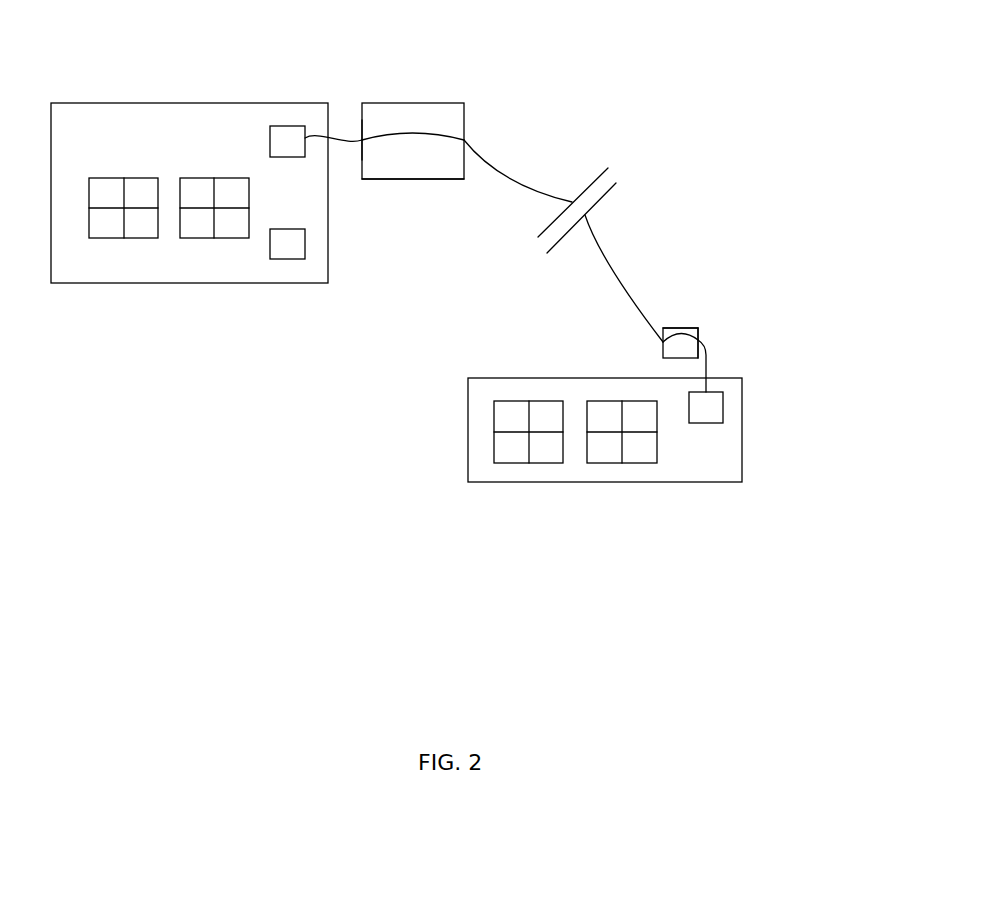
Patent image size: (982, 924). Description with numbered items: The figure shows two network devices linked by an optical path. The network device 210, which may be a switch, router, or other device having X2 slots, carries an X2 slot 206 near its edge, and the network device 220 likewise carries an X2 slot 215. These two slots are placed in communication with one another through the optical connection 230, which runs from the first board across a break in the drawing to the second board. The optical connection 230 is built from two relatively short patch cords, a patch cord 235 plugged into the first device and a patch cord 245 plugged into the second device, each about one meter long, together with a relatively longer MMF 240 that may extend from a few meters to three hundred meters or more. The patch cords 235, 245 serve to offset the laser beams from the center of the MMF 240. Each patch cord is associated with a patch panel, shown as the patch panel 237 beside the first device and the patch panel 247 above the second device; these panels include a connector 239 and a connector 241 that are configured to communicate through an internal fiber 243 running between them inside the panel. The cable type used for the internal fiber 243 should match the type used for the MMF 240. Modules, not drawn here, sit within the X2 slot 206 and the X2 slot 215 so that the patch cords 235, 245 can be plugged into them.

The network device 210 is at (63, 153).
The X2 slot of first line card 206 is at (337, 58).
The patch cord 235 is at (335, 142).
The patch panel 237 is at (407, 180).
The connector 239 is at (362, 140).
The connector 241 is at (464, 137).
The internal fiber 243 is at (412, 133).
The MMF 240 is at (596, 240).
The optical connection 230 is at (658, 158).
The patch panel 247 is at (668, 328).
The patch cord 245 is at (717, 378).
The network device 220 is at (695, 465).
The X2 slot 215 is at (720, 400).